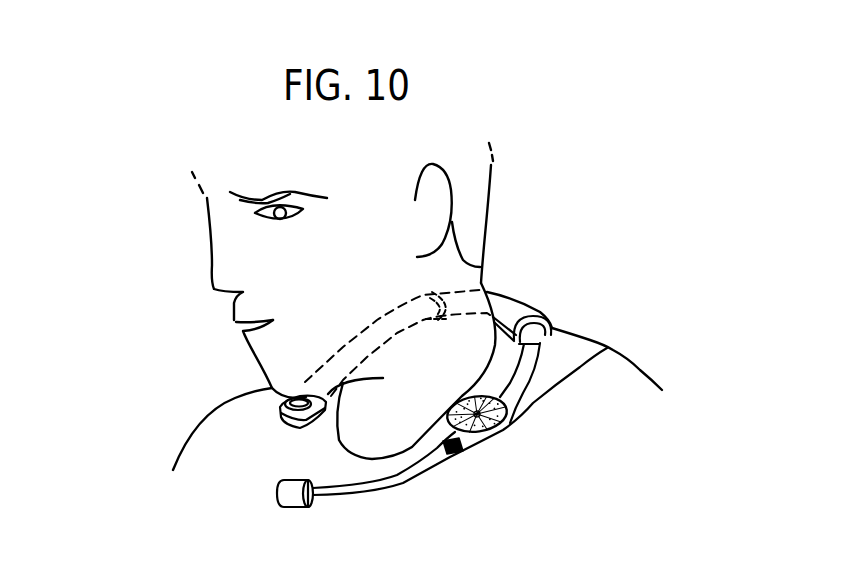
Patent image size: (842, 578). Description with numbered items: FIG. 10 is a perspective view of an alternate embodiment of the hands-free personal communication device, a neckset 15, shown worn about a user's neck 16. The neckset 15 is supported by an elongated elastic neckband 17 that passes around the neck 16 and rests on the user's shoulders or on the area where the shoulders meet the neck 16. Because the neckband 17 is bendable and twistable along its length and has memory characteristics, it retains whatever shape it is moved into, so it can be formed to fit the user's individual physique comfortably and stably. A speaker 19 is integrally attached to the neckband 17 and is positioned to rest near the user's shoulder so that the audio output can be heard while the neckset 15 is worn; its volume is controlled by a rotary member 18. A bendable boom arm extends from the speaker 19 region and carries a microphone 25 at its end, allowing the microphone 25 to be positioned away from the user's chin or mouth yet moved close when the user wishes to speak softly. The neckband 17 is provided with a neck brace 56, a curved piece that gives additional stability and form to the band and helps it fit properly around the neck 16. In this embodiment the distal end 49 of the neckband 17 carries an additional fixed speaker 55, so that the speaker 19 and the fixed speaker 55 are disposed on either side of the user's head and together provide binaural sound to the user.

The neckset 15 is at (571, 299).
The user's neck 16 is at (445, 392).
The elastic neckband 17 is at (523, 380).
The rotary member 18 is at (460, 452).
The speaker 19 is at (512, 423).
The microphone 25 is at (290, 494).
The distal end of the neckband 49 is at (327, 343).
The fixed speaker 55 is at (280, 418).
The neck brace 56 is at (508, 308).